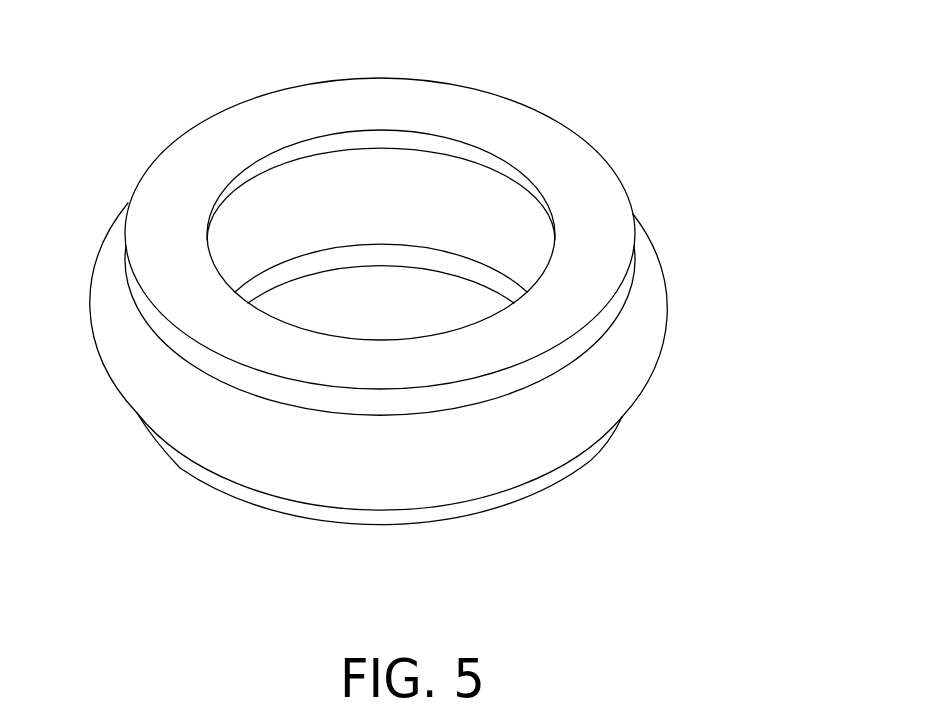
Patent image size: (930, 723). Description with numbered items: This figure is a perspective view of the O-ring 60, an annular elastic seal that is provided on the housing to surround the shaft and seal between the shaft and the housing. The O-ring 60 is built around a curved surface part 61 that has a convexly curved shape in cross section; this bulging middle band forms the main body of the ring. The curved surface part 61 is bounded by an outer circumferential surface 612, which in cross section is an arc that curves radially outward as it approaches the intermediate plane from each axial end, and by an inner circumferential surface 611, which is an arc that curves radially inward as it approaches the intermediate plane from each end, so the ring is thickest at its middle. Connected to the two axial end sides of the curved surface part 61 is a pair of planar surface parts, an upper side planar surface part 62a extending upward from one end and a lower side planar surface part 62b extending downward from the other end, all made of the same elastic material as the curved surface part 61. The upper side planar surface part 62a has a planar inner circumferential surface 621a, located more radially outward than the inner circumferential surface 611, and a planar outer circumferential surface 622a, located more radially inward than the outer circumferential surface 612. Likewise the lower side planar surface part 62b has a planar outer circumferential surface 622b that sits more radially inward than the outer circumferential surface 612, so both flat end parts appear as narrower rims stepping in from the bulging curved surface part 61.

The O-ring 60 is at (72, 31).
The curved surface part 61 is at (648, 388).
The inner circumferential surface 611 is at (500, 237).
The outer circumferential surface 612 is at (645, 322).
The upper side planar surface part 62a is at (585, 205).
The inner circumferential surface 621a is at (537, 200).
The outer circumferential surface 622a is at (623, 290).
The lower side planar surface part 62b is at (507, 514).
The outer circumferential surface 622b is at (583, 465).